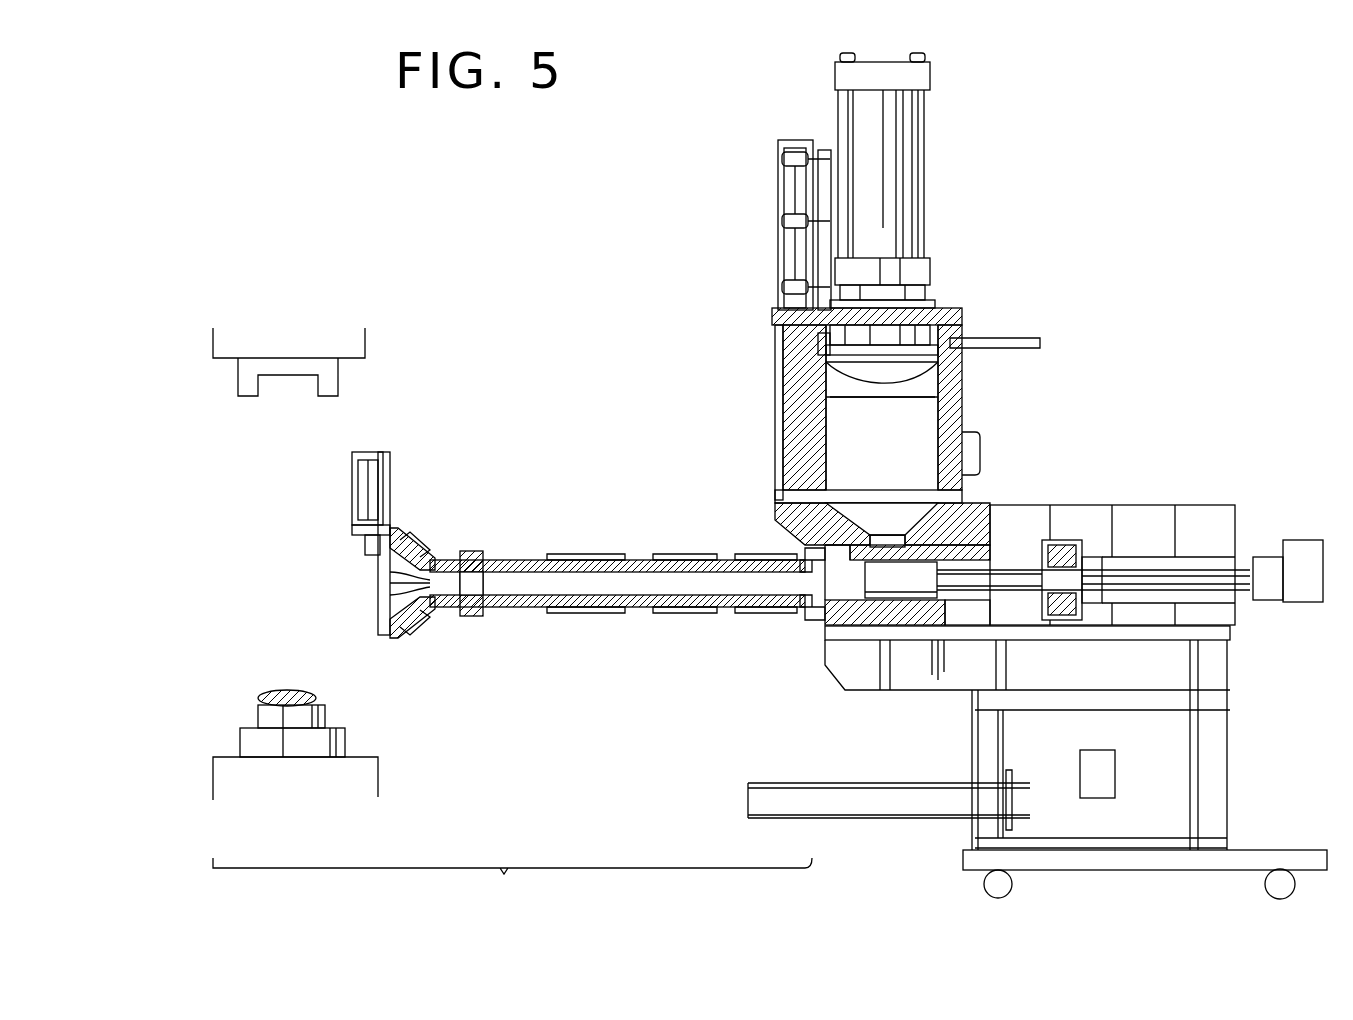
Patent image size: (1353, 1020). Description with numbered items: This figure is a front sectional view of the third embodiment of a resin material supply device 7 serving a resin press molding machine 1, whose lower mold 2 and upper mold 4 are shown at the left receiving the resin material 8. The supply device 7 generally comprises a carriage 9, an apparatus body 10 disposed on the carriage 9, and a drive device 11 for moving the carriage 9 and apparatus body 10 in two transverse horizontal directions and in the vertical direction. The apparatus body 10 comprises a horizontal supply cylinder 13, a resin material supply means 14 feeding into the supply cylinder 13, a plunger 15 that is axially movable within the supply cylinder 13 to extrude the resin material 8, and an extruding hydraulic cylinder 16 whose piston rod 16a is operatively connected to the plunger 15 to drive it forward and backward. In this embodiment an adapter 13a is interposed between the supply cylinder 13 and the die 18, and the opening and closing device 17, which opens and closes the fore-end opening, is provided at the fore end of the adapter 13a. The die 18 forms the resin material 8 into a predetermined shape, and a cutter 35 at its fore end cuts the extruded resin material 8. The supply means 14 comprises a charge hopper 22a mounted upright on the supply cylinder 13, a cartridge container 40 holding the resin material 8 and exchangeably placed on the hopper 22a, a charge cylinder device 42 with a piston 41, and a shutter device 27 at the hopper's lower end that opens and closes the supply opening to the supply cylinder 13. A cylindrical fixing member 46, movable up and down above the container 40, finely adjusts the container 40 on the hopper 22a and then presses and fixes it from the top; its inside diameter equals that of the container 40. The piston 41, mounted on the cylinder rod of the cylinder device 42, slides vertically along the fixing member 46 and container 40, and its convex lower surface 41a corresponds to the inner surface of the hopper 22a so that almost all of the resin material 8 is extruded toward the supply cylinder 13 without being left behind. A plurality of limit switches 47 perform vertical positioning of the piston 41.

The resin press molding machine 1 is at (389, 340).
The lower mold 2 is at (345, 743).
The upper mold 4 is at (338, 380).
The resin material supply device 7 is at (993, 488).
The resin material 8 is at (305, 693).
The carriage 9 is at (880, 636).
The apparatus body 10 is at (624, 545).
The drive device 11 is at (920, 680).
The supply cylinder 13 is at (815, 625).
The adapter 13a is at (553, 613).
The resin material supply means 14 is at (826, 405).
The plunger 15 is at (922, 574).
The extruding hydraulic cylinder 16 is at (1225, 598).
The piston rod 16a is at (1040, 585).
The opening and closing device 17 is at (475, 553).
The die 18 is at (412, 612).
The charge hopper 22a is at (790, 525).
The shutter device 27 is at (872, 538).
The cutter 35 is at (358, 490).
The cartridge container 40 is at (840, 427).
The piston 41 is at (915, 374).
The lower surface of the piston 41a is at (882, 398).
The charge cylinder device 42 is at (895, 218).
The cylindrical fixing member 46 is at (940, 405).
The limit switches 47 is at (790, 160).